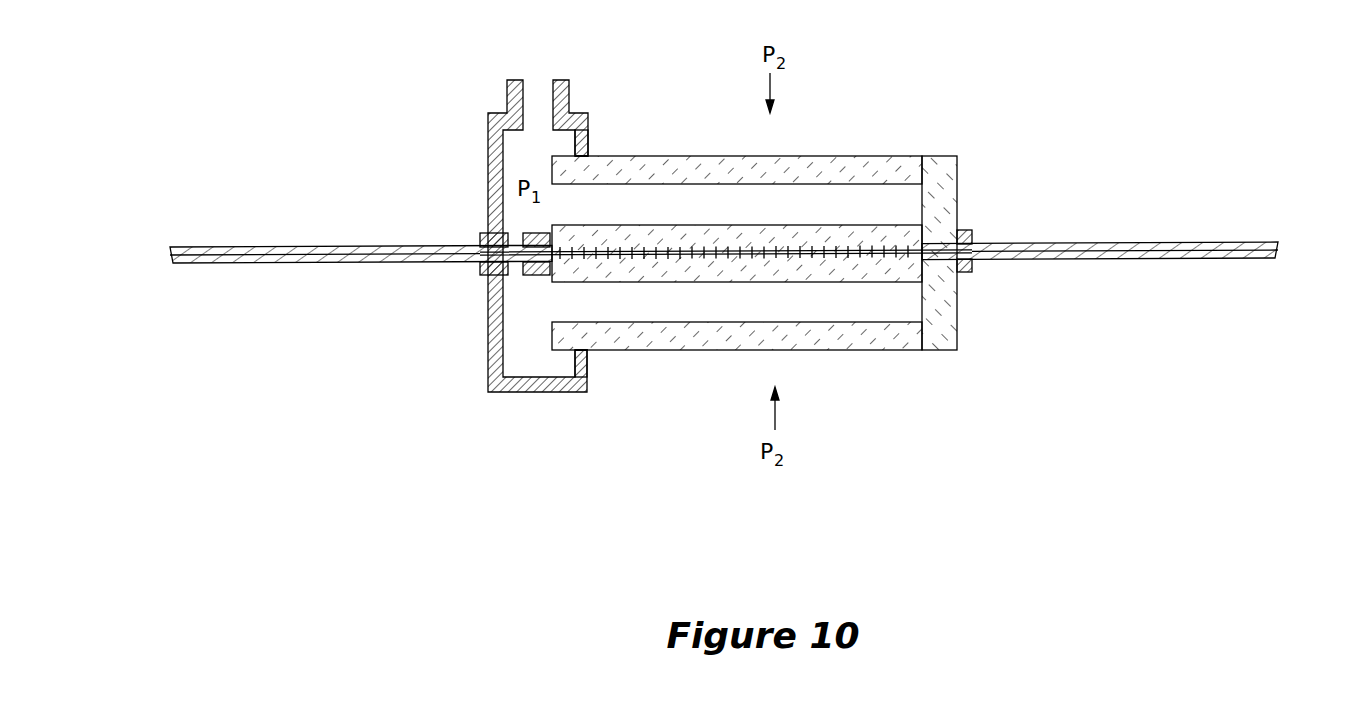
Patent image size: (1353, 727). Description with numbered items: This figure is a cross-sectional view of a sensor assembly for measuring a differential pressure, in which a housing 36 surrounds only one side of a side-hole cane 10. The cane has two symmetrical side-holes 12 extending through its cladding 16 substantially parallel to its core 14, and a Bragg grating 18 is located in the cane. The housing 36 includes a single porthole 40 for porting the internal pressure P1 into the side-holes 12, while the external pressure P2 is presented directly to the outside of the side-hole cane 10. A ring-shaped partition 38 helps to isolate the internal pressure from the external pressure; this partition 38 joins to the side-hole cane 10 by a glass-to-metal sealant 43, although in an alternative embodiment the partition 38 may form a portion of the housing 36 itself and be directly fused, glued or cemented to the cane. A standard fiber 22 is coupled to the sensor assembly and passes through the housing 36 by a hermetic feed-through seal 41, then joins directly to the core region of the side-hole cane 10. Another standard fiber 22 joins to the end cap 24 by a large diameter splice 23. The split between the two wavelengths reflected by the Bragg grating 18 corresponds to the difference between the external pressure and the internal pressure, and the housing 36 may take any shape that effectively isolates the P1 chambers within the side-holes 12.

The side-hole cane waveguide 10 is at (767, 257).
The side-holes 12 is at (898, 212).
The core 14 is at (724, 208).
The cladding 16 is at (680, 167).
The Bragg grating 18 is at (794, 236).
The standard fiber 22 is at (448, 282).
The large diameter splice 23 is at (530, 277).
The end cap 24 is at (937, 350).
The housing 36 is at (583, 253).
The ring-shaped partition 38 is at (583, 138).
The porthole 40 is at (537, 98).
The hermetic feed-through seal 41 is at (487, 232).
The glass-to-metal sealant 43 is at (596, 146).